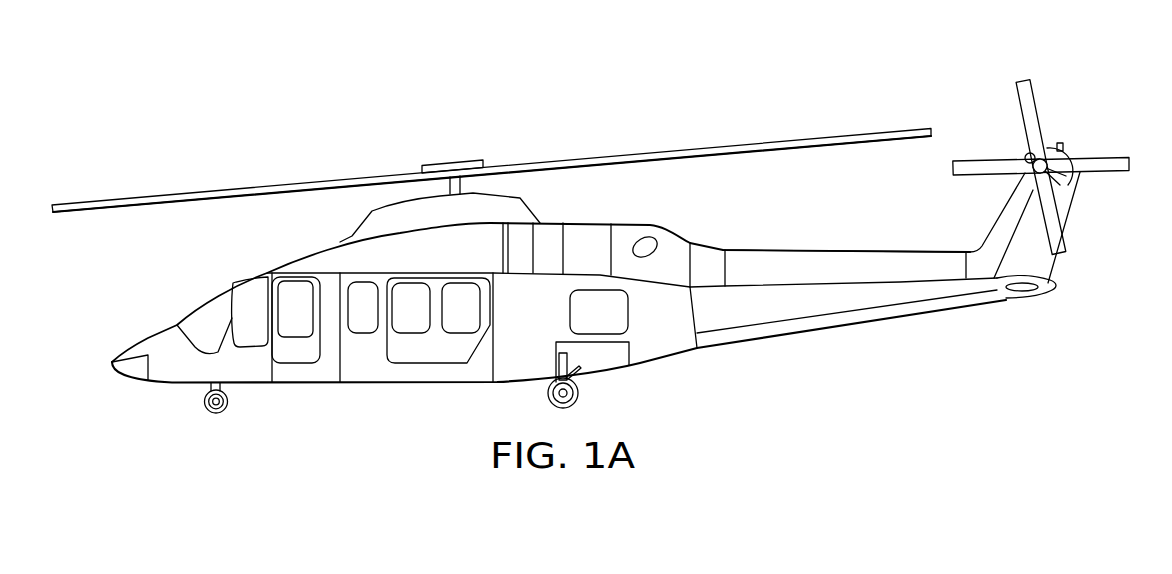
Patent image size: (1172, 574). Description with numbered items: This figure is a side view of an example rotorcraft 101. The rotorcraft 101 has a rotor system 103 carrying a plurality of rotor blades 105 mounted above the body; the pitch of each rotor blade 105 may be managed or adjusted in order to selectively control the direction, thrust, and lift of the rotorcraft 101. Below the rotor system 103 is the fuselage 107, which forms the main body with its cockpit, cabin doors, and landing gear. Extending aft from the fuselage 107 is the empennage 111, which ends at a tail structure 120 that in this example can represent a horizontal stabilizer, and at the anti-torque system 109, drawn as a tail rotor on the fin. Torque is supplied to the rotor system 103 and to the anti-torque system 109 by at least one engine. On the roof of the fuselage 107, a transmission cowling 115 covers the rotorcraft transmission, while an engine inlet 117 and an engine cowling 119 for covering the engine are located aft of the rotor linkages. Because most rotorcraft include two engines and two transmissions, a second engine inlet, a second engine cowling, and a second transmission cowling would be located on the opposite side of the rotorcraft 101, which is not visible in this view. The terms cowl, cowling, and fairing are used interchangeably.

The rotorcraft 101 is at (310, 90).
The rotor system 103 is at (473, 138).
The rotor blade 105 is at (235, 188).
The fuselage 107 is at (363, 382).
The anti-torque system 109 is at (1075, 124).
The empennage 111 is at (867, 327).
The transmission cowling 115 is at (409, 252).
The engine inlet 117 is at (548, 237).
The engine cowling 119 is at (585, 238).
The tail structure 120 is at (1022, 293).